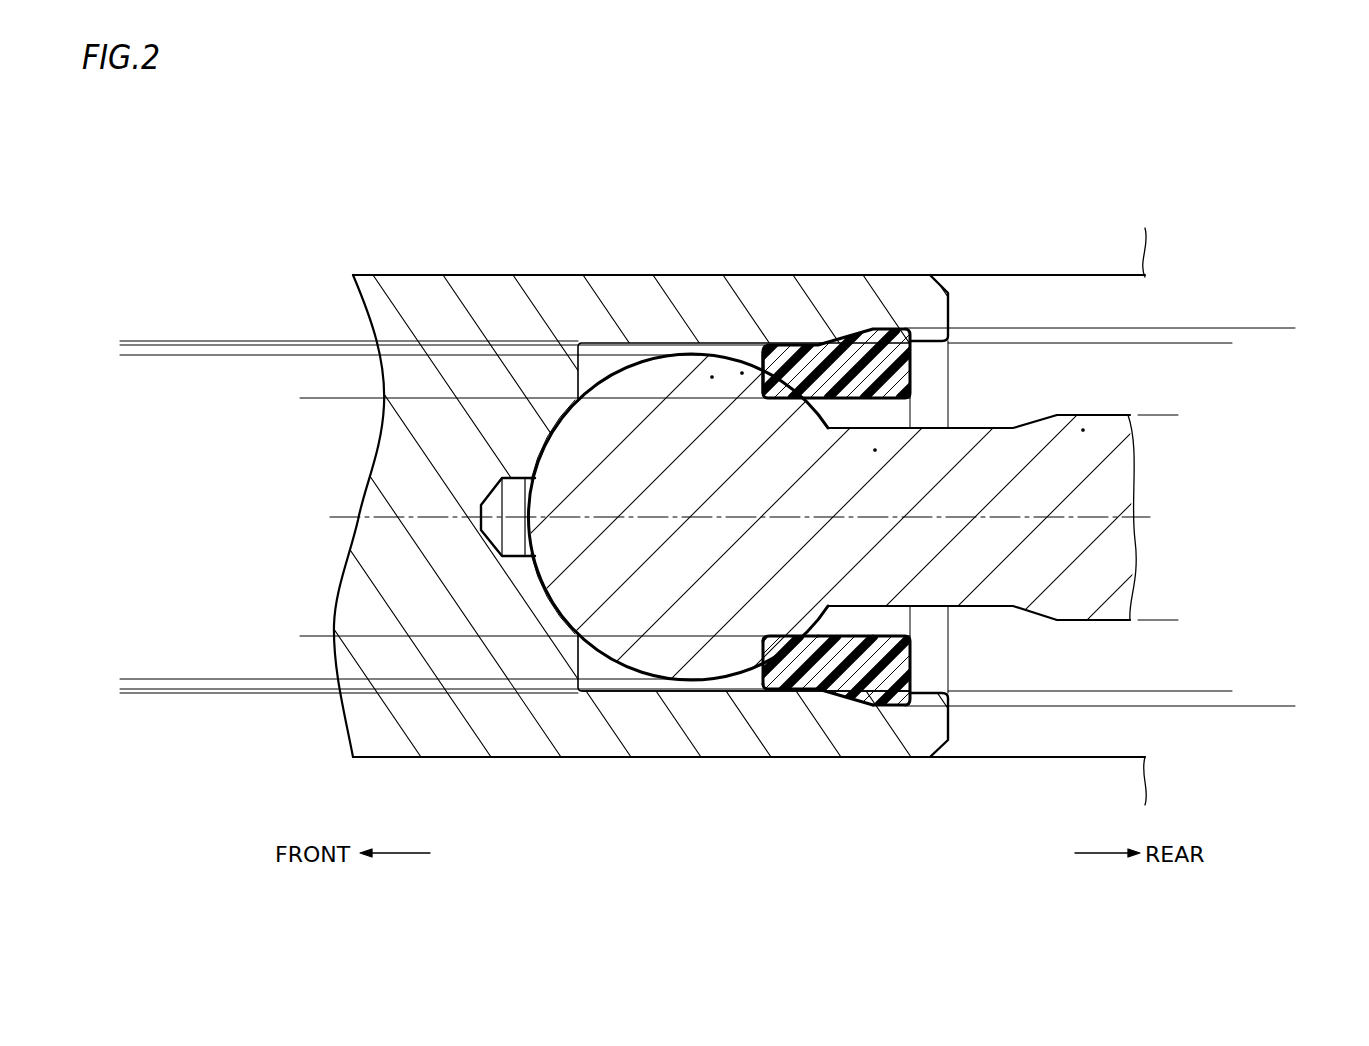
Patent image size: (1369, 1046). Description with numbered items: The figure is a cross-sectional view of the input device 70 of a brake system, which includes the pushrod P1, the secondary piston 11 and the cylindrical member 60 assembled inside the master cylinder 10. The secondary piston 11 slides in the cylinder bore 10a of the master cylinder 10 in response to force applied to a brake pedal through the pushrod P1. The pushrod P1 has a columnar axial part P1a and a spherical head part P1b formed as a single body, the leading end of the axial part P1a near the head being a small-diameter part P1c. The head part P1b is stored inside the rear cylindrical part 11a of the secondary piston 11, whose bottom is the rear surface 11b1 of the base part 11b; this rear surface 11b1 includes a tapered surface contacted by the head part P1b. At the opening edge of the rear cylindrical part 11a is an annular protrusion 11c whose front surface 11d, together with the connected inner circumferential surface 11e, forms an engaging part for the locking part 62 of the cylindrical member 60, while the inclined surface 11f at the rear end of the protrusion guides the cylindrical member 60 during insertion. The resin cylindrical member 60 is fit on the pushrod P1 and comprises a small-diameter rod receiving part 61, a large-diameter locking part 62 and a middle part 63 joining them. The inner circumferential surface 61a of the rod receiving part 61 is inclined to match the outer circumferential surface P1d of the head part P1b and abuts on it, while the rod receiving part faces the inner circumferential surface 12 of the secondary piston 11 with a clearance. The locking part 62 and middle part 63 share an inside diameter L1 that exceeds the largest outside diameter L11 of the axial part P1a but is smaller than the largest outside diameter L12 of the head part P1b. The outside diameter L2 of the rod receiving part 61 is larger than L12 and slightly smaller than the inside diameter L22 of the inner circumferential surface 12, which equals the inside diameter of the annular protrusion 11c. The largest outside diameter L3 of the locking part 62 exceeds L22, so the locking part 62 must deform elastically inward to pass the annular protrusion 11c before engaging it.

The master cylinder 10 is at (1165, 245).
The cylinder bore 10a is at (1036, 745).
The secondary piston 11 is at (645, 234).
The rear cylindrical part 11a is at (630, 290).
The base part 11b is at (470, 290).
The rear surface 11b1 is at (570, 606).
The annular protrusion 11c is at (942, 322).
The front surface 11d is at (914, 366).
The inner circumferential surface 11e is at (910, 340).
The inclined surface 11f is at (930, 337).
The inner circumferential surface 12 is at (616, 690).
The cylindrical member 60 is at (837, 592).
The rod receiving part 61 is at (797, 690).
The inner circumferential surface 61a is at (726, 581).
The locking part 62 is at (897, 705).
The middle part 63 is at (855, 705).
The input device 70 is at (669, 217).
The pushrod P1 is at (1040, 186).
The axial part P1a is at (1083, 430).
The head part P1b is at (712, 377).
The small-diameter part P1c is at (875, 450).
The outer circumferential surface P1d is at (742, 373).
The inside diameter L1 is at (314, 409).
The outside diameter L2 is at (197, 356).
The largest outside diameter L3 is at (1285, 339).
The largest outside diameter L11 is at (1167, 426).
The largest outside diameter L12 is at (255, 366).
The inside diameter L22 is at (1223, 680).